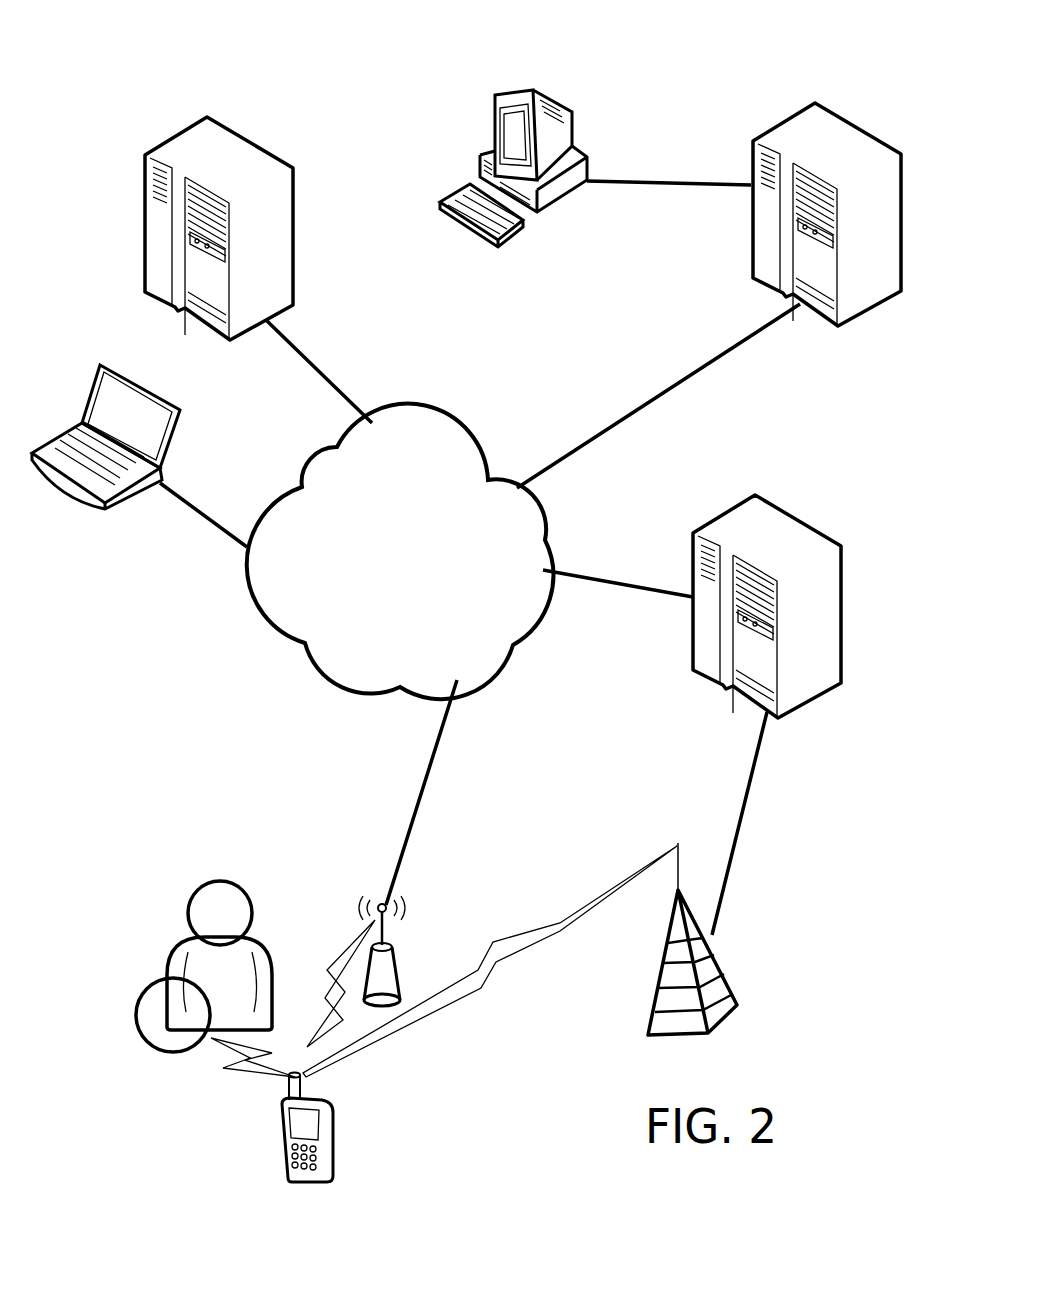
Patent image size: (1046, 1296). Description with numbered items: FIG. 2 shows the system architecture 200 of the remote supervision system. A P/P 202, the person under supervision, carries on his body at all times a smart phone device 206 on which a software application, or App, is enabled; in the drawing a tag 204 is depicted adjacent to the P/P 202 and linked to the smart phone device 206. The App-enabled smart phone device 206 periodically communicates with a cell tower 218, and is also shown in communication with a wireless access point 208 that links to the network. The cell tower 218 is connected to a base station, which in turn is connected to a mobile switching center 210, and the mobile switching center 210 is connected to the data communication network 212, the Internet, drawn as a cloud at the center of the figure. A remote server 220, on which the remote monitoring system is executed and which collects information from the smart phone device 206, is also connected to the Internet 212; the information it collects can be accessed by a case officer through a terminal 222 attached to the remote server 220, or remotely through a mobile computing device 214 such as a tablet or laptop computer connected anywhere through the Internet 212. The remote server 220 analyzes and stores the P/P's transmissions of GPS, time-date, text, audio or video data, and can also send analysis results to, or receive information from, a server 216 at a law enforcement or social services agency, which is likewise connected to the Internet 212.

The system environment 200 is at (233, 65).
The P/P 202 is at (177, 943).
The tag 204 is at (143, 1035).
The smart phone device 206 is at (282, 1170).
The wireless access point 208 is at (375, 945).
The mobile switching center 210 is at (823, 532).
The data communication network 212 is at (374, 624).
The mobile computing device 214 is at (85, 405).
The server 216 is at (145, 213).
The cell tower 218 is at (648, 1025).
The remote server 220 is at (751, 215).
The terminal 222 is at (582, 150).